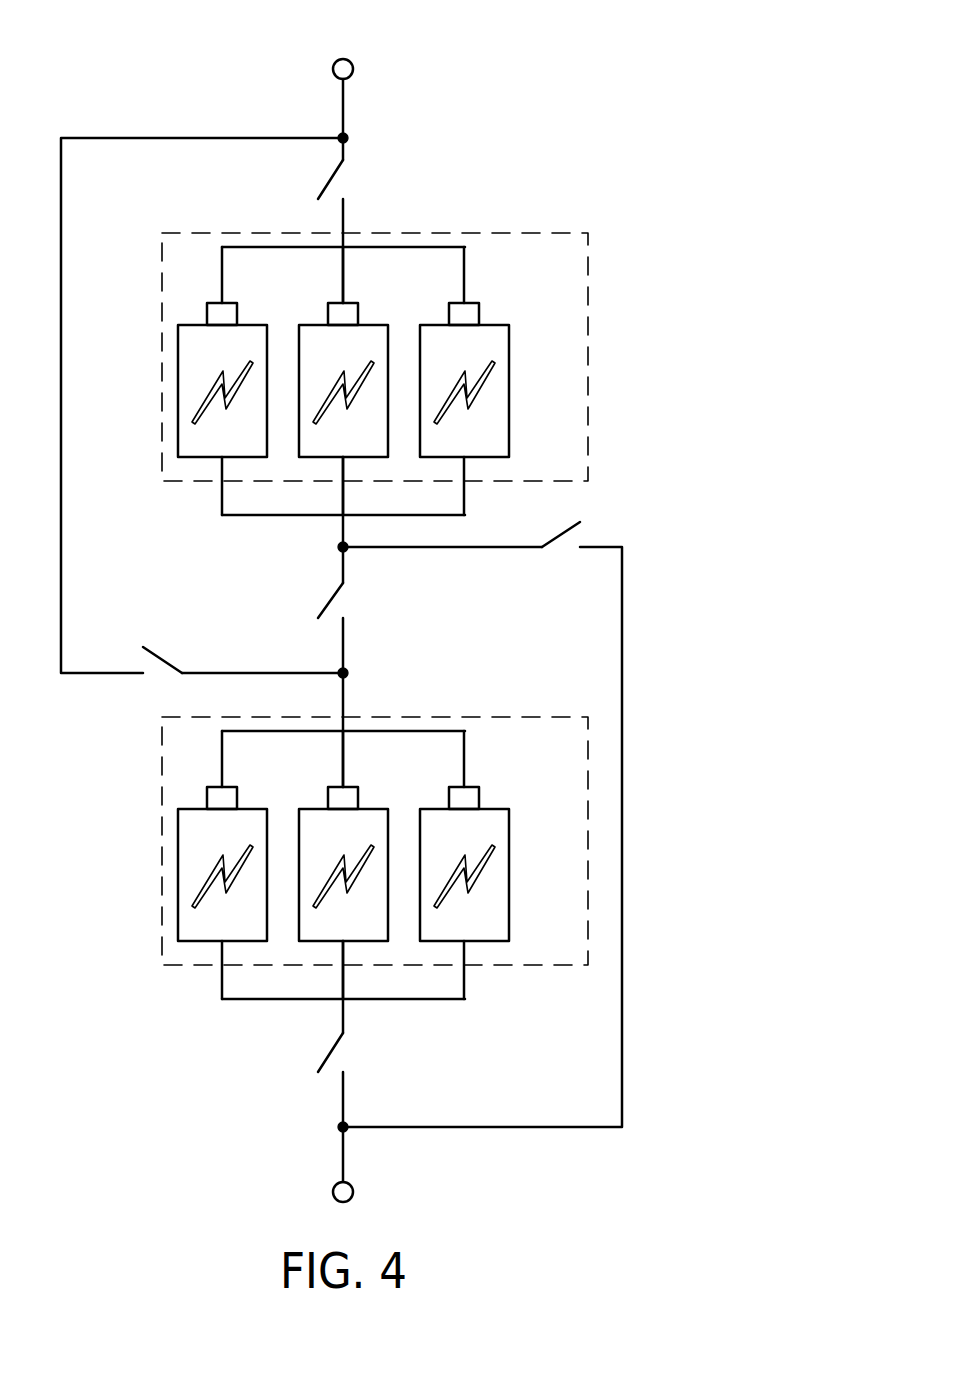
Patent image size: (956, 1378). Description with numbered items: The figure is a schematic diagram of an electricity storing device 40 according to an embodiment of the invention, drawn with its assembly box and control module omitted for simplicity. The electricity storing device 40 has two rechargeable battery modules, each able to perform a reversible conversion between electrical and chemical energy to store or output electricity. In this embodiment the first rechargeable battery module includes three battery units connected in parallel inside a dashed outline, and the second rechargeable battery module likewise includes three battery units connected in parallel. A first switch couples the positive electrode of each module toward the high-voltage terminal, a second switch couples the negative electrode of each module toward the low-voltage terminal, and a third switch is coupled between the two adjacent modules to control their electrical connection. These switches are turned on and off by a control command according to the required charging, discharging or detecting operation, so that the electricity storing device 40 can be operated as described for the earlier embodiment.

The electricity storing device 40 is at (560, 62).